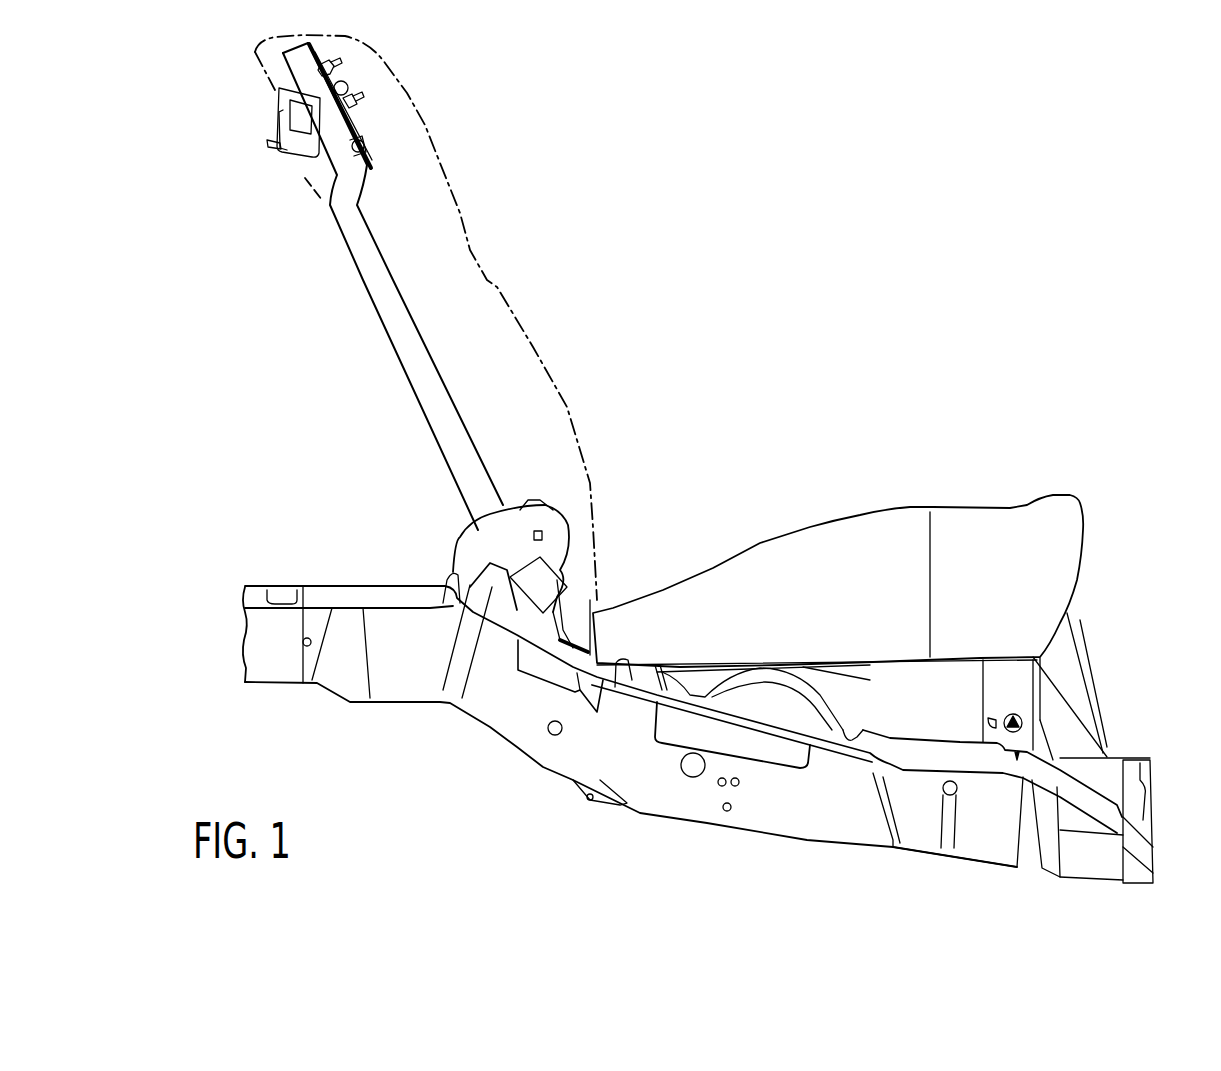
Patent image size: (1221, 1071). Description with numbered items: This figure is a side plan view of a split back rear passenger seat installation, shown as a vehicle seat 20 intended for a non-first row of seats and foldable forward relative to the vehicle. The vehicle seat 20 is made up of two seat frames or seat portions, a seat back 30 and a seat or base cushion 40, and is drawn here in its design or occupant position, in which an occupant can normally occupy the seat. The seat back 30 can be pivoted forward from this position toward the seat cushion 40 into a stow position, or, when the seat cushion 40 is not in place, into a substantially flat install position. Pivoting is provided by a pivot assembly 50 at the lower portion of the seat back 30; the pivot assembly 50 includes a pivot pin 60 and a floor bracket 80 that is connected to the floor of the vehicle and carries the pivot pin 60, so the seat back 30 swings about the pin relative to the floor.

The vehicle seat 20 is at (800, 409).
The seat back 30 is at (463, 206).
The seat cushion 40 is at (1018, 510).
The pivot assembly 50 is at (458, 530).
The pivot pin 60 is at (546, 534).
The floor bracket 80 is at (450, 565).